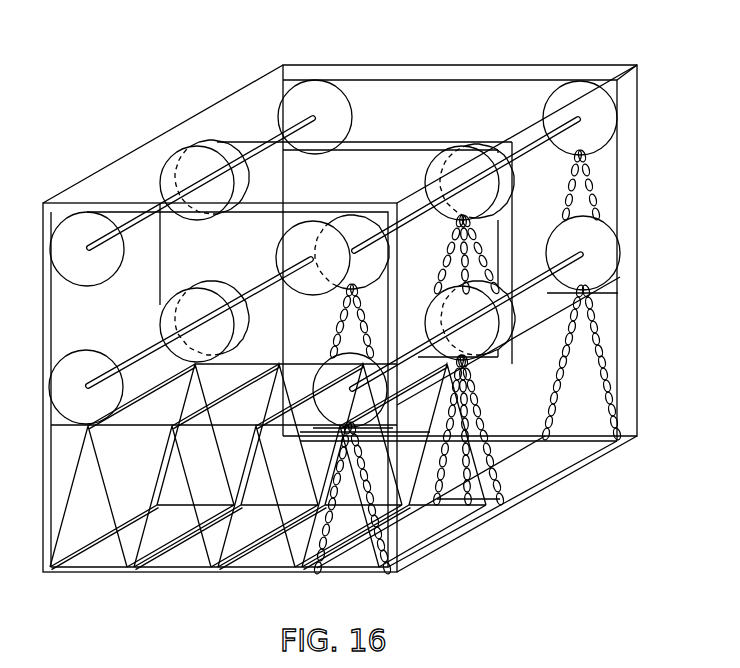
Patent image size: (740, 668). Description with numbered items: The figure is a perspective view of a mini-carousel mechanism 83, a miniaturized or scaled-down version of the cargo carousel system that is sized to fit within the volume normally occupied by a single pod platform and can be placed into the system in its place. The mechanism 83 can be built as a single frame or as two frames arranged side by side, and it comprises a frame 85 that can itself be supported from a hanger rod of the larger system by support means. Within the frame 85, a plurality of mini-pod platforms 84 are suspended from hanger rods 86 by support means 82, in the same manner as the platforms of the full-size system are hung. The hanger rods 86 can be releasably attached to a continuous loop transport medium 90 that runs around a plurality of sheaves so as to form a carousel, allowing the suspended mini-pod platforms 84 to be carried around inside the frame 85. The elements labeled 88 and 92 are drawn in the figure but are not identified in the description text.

The chain 82 is at (480, 376).
The three-dimensional array assembly 83 is at (245, 22).
The base plate 84 is at (533, 476).
The frame 85 is at (458, 65).
The pyramidal support 86 is at (155, 392).
The rod 88 is at (533, 143).
The sphere 90 is at (160, 290).
The sphere 92 is at (335, 123).